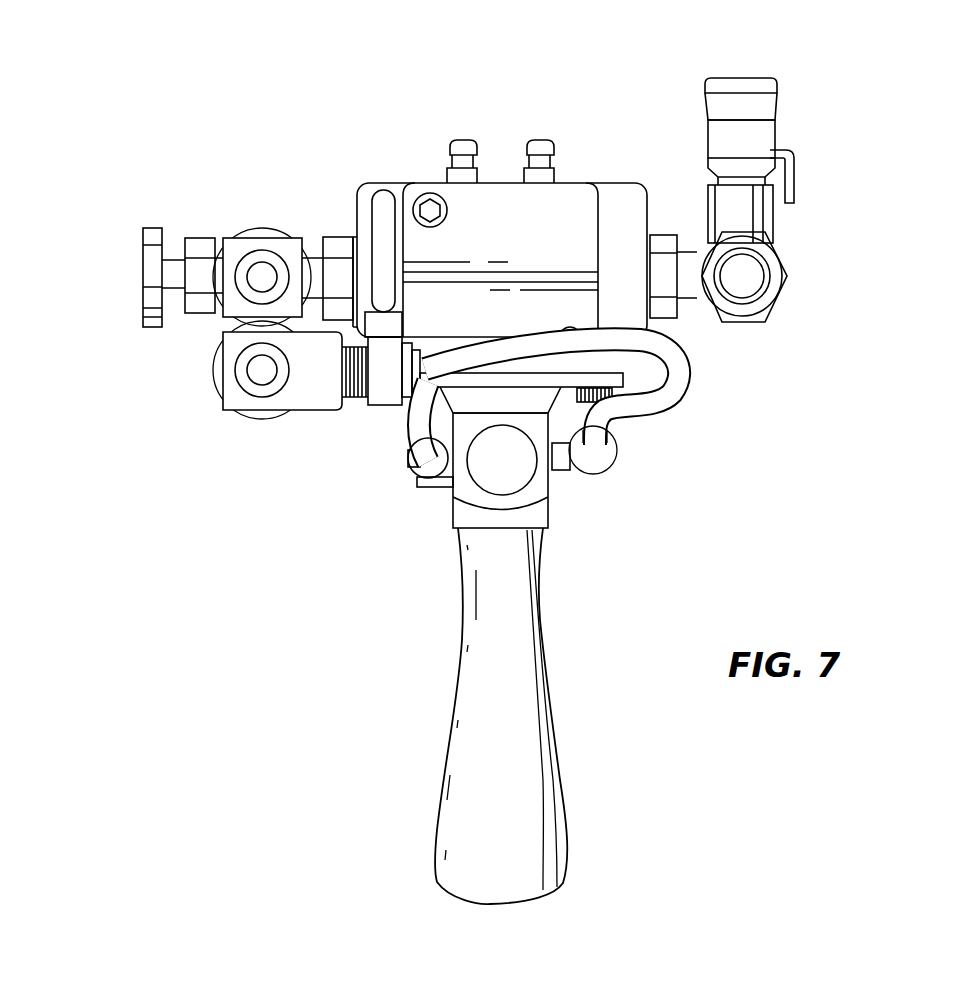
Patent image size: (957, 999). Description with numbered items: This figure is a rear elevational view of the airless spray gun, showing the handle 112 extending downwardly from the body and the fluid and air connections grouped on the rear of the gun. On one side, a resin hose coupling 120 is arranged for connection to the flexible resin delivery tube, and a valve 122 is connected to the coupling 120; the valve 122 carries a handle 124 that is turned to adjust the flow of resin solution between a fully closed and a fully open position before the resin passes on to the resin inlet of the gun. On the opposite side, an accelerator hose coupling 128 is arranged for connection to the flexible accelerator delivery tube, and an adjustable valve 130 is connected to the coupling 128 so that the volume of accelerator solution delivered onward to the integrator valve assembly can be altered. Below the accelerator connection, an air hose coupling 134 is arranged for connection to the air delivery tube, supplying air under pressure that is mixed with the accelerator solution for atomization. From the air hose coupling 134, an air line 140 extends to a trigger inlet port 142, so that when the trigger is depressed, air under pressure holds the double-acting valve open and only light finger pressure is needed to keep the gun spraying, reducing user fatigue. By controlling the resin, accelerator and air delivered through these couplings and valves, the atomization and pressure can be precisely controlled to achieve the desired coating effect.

The handle 112 is at (543, 760).
The resin hose coupling 120 is at (768, 273).
The valve 122 is at (772, 225).
The handle 124 is at (750, 78).
The accelerator hose coupling 128 is at (262, 255).
The adjustable valve 130 is at (142, 252).
The air hose coupling 134 is at (235, 370).
The air line 140 is at (687, 377).
The trigger inlet port 142 is at (623, 442).